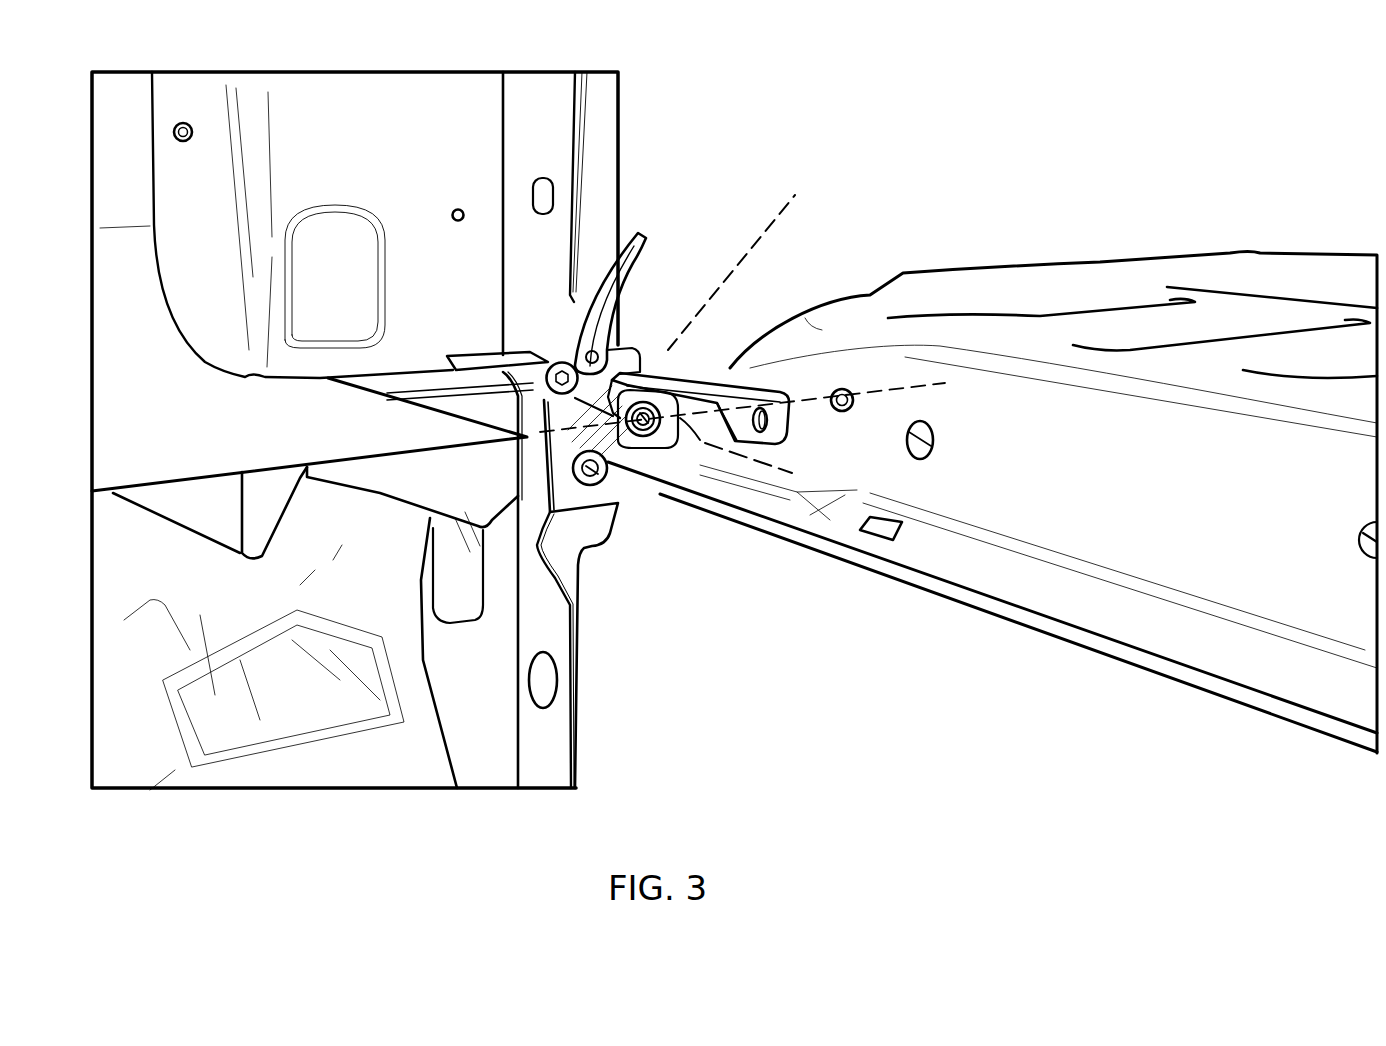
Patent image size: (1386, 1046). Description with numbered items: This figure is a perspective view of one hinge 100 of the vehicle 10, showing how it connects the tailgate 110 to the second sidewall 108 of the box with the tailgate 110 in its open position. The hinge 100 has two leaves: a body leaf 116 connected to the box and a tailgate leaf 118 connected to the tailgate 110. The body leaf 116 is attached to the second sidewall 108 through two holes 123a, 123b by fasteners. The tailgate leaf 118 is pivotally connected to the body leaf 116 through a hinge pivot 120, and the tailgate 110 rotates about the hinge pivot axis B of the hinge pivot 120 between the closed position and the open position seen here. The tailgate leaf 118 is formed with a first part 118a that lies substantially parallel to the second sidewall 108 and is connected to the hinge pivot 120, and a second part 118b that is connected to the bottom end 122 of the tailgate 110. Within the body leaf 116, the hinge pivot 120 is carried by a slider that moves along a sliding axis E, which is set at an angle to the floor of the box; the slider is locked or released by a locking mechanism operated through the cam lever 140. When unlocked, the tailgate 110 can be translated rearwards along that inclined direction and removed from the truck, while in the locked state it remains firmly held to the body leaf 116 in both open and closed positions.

The vehicle 10 is at (684, 100).
The hinge 100 is at (655, 340).
The second sidewall 108 is at (407, 100).
The tailgate 110 is at (1295, 272).
The body leaf 116 is at (574, 452).
The tailgate leaf 118 is at (699, 377).
The first part 118a is at (677, 434).
The second part 118b is at (780, 422).
The hinge pivot 120 is at (645, 440).
The bottom end 122 is at (945, 497).
The hole 123a is at (600, 472).
The hole 123b is at (558, 364).
The cam lever 140 is at (640, 240).
The sliding axis E is at (812, 182).
The hinge pivot axis B is at (783, 470).